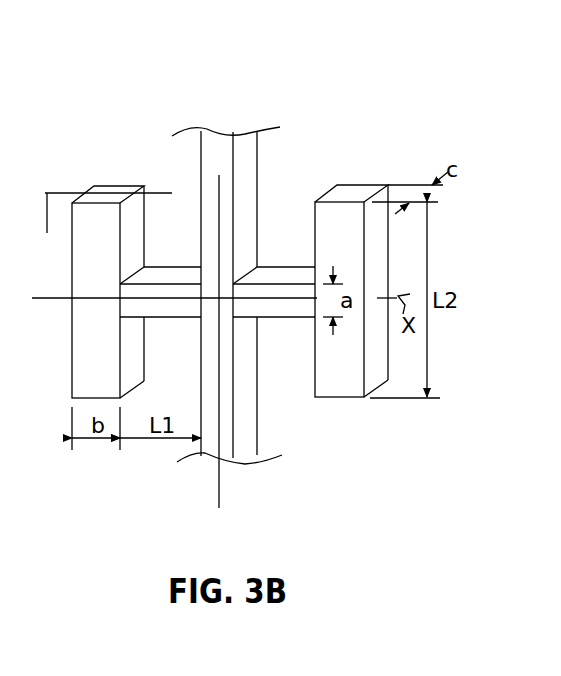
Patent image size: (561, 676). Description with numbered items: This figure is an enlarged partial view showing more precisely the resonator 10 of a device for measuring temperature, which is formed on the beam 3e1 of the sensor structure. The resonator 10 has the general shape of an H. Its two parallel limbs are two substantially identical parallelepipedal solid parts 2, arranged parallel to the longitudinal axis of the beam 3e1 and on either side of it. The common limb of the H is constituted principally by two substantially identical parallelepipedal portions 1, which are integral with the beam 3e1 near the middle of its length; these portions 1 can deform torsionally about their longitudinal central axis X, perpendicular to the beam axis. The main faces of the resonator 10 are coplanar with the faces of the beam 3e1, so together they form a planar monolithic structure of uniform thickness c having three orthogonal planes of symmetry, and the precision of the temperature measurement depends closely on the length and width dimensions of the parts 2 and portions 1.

The resonator 10 is at (295, 173).
The beam 3e1 is at (210, 155).
The parallelepipedal portion 1 is at (153, 277).
The parallelepipedal solid part 2 is at (95, 364).